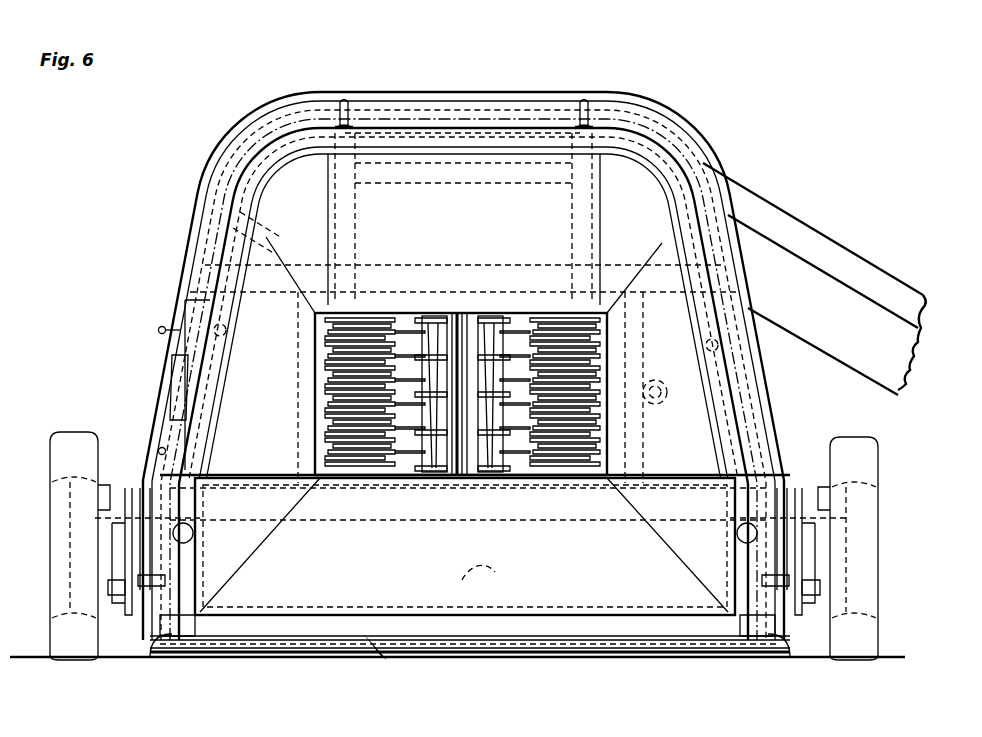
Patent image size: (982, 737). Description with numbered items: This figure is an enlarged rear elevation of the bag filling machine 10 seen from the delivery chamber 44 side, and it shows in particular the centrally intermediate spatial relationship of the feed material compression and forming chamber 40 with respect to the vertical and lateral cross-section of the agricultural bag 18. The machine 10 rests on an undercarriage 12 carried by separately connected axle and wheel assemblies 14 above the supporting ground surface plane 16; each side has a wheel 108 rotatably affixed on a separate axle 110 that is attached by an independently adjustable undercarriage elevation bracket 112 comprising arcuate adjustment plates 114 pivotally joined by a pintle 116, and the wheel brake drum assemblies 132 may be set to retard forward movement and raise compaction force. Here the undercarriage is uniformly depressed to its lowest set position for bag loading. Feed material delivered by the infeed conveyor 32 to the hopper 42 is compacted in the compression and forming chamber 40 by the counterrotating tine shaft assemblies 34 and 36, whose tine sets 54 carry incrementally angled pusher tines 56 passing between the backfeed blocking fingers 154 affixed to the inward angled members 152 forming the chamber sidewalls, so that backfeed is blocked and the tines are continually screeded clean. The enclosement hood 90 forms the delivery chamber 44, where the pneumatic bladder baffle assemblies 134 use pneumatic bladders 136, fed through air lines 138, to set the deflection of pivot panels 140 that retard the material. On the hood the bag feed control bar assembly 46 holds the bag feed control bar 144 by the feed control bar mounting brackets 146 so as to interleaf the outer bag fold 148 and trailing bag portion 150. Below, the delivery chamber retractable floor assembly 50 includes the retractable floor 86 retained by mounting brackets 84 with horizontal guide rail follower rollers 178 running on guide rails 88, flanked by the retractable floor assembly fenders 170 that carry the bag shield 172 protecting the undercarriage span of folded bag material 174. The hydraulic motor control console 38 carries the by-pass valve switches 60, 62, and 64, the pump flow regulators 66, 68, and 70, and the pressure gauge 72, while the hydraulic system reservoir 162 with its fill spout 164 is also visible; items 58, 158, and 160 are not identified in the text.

The machine 10 is at (108, 200).
The undercarriage 12 is at (187, 572).
The axle and wheel assemblies 14 is at (122, 640).
The supporting ground surface plane 16 is at (883, 660).
The agricultural bag 18 is at (493, 112).
The infeed conveyor 32 is at (806, 225).
The counterrotating tine shaft assembly 34 is at (412, 278).
The counterrotating tine shaft assembly 36 is at (550, 278).
The hydraulic motor control console 38 is at (118, 378).
The feed material compression and forming chamber 40 is at (468, 310).
The hopper 42 is at (365, 248).
The delivery chamber 44 is at (440, 478).
The bag feed control bar assembly 46 is at (421, 80).
The delivery chamber retractable floor assembly 50 is at (385, 652).
The counterrotating tine sets 54 is at (402, 490).
The pusher tines 56 is at (402, 318).
The post 58 is at (598, 125).
The pump on-off by-pass valve switch 60 is at (158, 330).
The pump on-off by-pass valve switch 62 is at (160, 393).
The pump on-off by-pass valve switch 64 is at (158, 451).
The pump flow regulator 66 is at (177, 313).
The pump flow regulator 68 is at (175, 368).
The pump flow regulator 70 is at (175, 438).
The pump pressure gauge 72 is at (203, 312).
The retractable floor assembly mounting bracket 84 is at (187, 613).
The retractable floor 86 is at (530, 627).
The guide rails 88 is at (167, 623).
The enclosement hood 90 is at (255, 138).
The wheels 108 is at (47, 457).
The axles 110 is at (110, 538).
The undercarriage elevation brackets 112 is at (115, 566).
The arcuate adjustment plates 114 is at (85, 470).
The pintle 116 is at (113, 590).
The wheel brake drum assemblies 132 is at (100, 485).
The pneumatic bladder baffle assemblies 134 is at (474, 80).
The pneumatic bladders 136 is at (485, 130).
The air lines 138 is at (430, 187).
The pivot panels 140 is at (520, 158).
The bag feed control bar 144 is at (290, 108).
The feed control bar mounting brackets 146 is at (341, 122).
The outer bag fold 148 is at (255, 142).
The trailing bag portion 150 is at (264, 126).
The inward angled members 152 is at (315, 360).
The backfeed blocking fingers 154 is at (338, 318).
The inner wall 158 is at (380, 135).
The inner frame 160 is at (657, 183).
The hydraulic system reservoir 162 is at (480, 590).
The fill spout 164 is at (640, 500).
The retractable floor assembly fender 170 is at (148, 630).
The bag shield 172 is at (550, 657).
The folded bag material 174 is at (588, 650).
The horizontal guide rail follower roller 178 is at (187, 600).